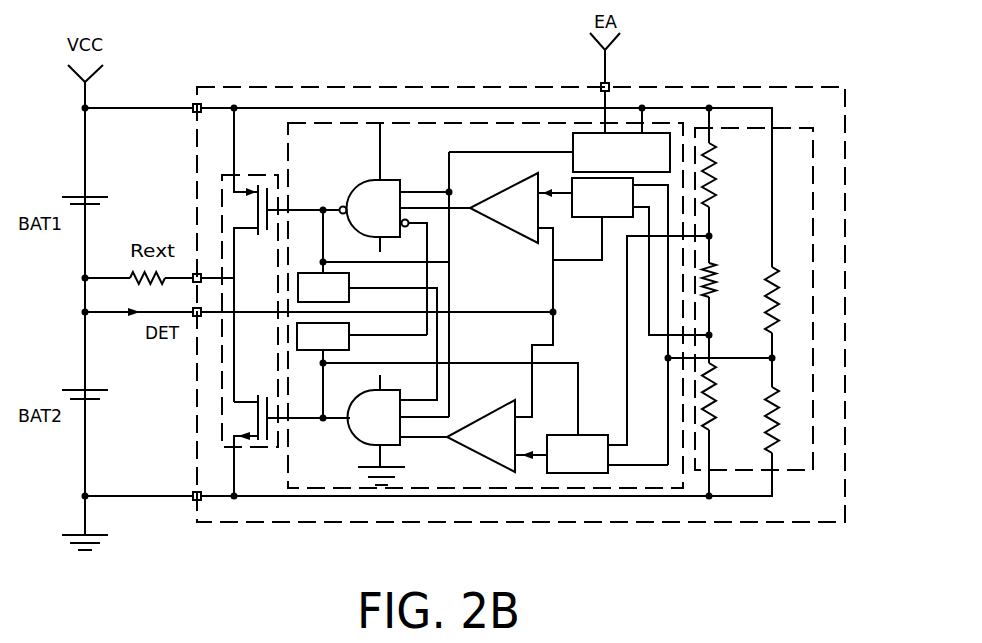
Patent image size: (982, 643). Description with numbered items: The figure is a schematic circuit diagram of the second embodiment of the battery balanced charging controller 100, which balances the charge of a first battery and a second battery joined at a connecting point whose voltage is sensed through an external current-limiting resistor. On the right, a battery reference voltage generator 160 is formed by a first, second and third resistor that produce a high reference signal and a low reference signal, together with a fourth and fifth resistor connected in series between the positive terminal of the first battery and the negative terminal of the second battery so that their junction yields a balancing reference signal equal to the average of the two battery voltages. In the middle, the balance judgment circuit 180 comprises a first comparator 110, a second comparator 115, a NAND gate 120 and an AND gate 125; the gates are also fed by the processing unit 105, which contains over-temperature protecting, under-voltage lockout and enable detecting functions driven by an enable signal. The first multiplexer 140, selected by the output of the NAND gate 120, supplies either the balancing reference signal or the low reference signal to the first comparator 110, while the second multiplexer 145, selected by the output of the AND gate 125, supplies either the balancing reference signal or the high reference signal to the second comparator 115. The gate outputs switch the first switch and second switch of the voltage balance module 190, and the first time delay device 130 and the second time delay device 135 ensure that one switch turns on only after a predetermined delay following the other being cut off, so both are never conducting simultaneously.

The battery balanced charging controller 100 is at (770, 90).
The processing unit 105 is at (621, 140).
The first comparator 110 is at (518, 188).
The second comparator 115 is at (485, 415).
The NAND gate 120 is at (367, 193).
The AND gate 125 is at (398, 437).
The first time delay device 130 is at (367, 336).
The second time delay device 135 is at (437, 379).
The first multiplexer 140 is at (582, 218).
The second multiplexer 145 is at (563, 432).
The battery reference voltage generator 160 is at (780, 137).
The balance judgment circuit 180 is at (297, 155).
The voltage balance module 190 is at (240, 447).